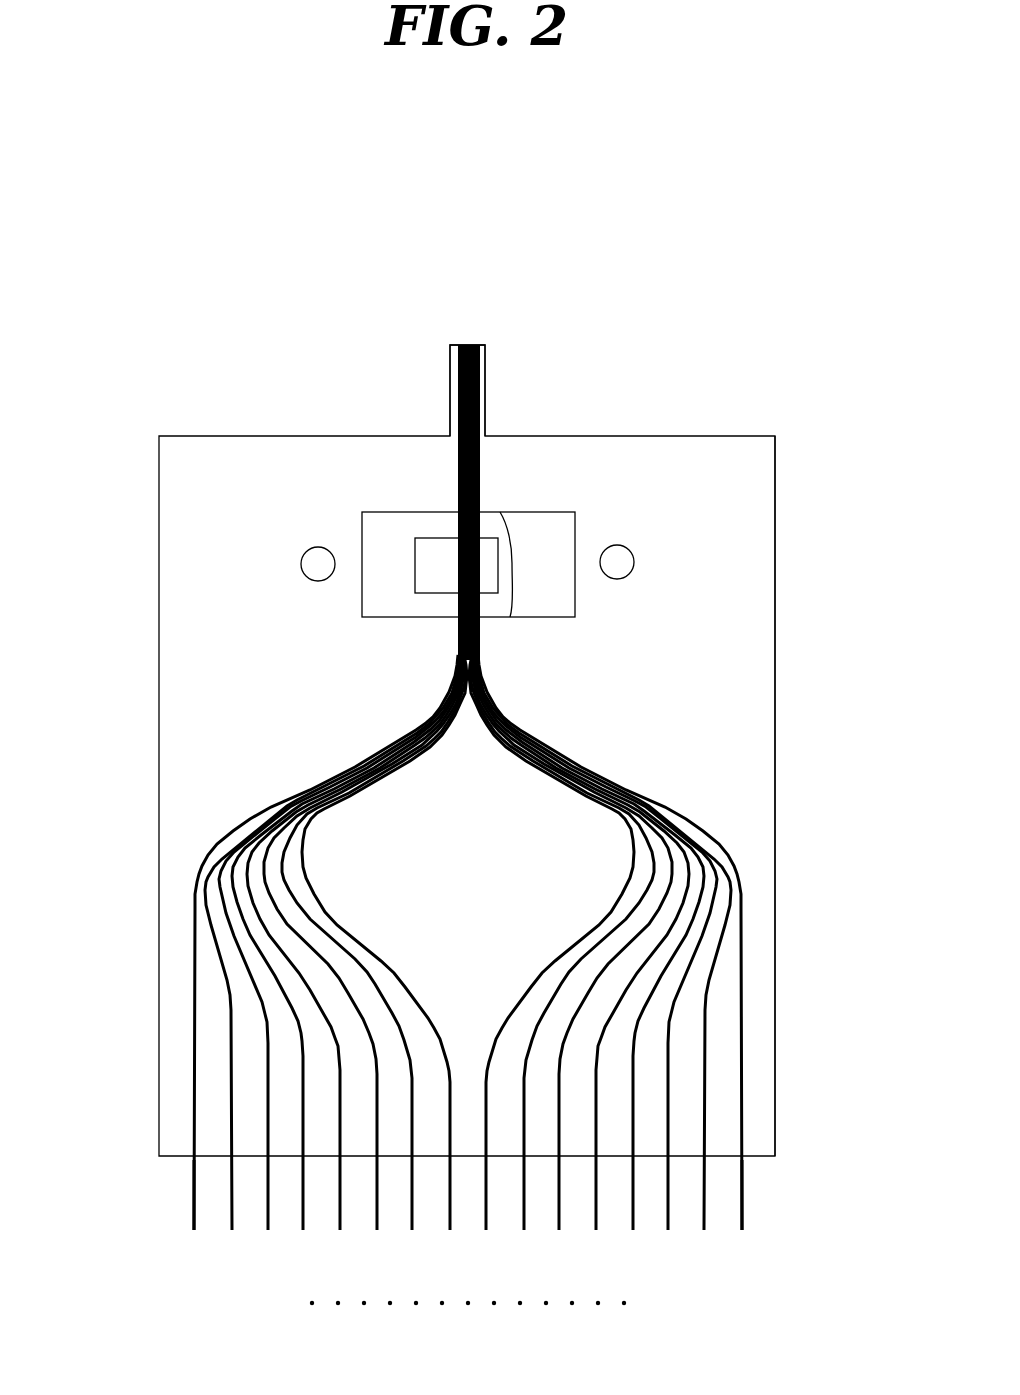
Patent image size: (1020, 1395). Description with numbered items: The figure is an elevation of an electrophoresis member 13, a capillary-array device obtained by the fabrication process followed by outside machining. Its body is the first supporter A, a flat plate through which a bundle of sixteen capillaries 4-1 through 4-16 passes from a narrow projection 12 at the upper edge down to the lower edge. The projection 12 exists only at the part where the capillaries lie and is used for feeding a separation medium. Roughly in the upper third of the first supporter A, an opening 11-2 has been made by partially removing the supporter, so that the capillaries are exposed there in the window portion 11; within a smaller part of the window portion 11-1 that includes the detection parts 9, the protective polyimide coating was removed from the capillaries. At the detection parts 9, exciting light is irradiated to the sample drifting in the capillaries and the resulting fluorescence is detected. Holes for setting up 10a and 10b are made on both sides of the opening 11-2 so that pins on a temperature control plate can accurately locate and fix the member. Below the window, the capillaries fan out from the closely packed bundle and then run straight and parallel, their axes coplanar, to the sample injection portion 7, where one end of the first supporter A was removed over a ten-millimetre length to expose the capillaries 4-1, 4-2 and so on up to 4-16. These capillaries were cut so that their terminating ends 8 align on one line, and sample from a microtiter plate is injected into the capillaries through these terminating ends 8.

The first supporter A is at (740, 620).
The electrophoresis member 13 is at (775, 850).
The projection 12 is at (486, 345).
The window portion 11 is at (510, 560).
The part of the window portion 11-1 is at (422, 537).
The opening 11-2 is at (533, 512).
The hole for setting up 10a is at (318, 547).
The hole for setting up 10b is at (629, 549).
The detection parts 9 is at (458, 567).
The capillary 4-1 is at (195, 1182).
The capillary 4-2 is at (232, 1213).
The capillary 4-16 is at (742, 1197).
The terminating ends 8 is at (194, 1230).
The sample injection portion 7 is at (763, 1155).